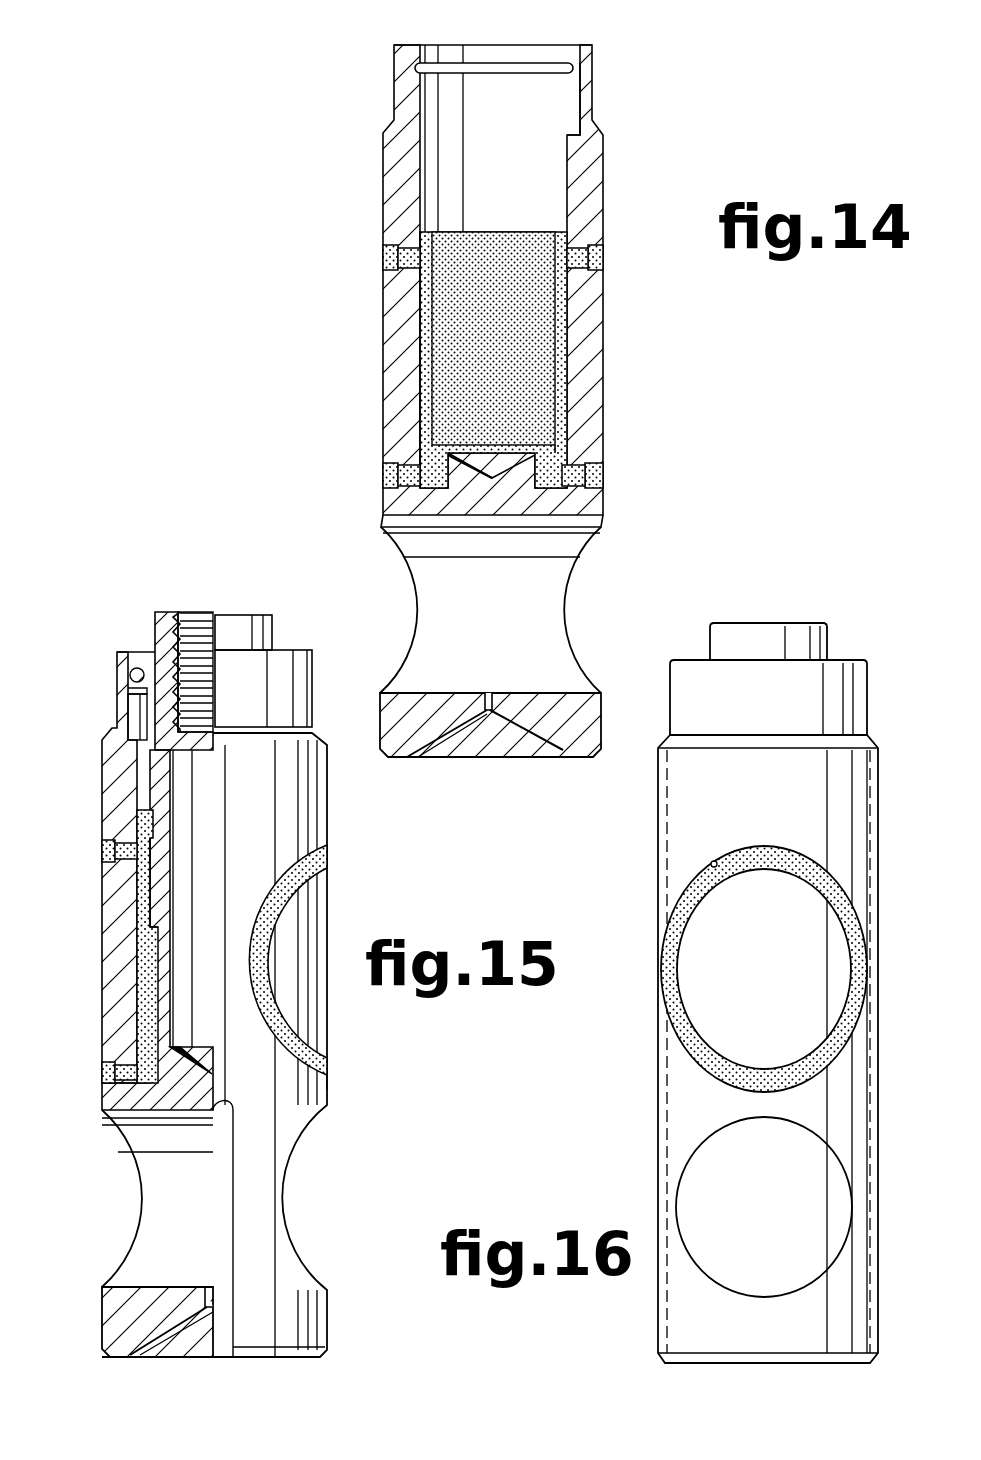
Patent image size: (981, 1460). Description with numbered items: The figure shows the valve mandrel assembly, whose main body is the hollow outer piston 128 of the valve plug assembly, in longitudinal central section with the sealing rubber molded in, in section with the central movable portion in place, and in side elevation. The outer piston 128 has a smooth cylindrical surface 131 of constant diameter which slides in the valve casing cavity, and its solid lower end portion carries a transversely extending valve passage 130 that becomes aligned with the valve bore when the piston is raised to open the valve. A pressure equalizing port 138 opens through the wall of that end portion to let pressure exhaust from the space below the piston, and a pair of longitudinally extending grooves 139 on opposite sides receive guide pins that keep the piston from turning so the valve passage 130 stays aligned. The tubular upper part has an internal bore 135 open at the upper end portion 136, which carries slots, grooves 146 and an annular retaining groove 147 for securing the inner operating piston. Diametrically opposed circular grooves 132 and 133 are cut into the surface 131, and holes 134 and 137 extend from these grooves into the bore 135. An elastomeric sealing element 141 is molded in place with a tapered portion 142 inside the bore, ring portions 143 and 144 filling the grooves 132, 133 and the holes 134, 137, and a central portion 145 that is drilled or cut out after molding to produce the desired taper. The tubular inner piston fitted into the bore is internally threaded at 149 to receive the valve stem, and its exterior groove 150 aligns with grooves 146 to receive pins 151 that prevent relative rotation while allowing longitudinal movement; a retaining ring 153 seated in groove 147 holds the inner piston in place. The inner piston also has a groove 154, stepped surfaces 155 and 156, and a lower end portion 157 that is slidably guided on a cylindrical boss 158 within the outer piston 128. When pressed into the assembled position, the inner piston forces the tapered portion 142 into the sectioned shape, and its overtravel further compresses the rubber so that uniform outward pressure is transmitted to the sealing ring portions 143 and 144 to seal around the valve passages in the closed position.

In FIG. 14, the outer piston 128 is at (640, 330).
In FIG. 16, the outer piston 128 is at (623, 1010).
In FIG. 14, the valve passage 130 is at (413, 694).
In FIG. 15, the valve passage 130 is at (120, 1290).
In FIG. 16, the valve passage 130 is at (712, 1276).
In FIG. 14, the smooth cylindrical surface 131 is at (603, 150).
In FIG. 14, the circular groove 132 is at (592, 488).
In FIG. 15, the circular groove 132 is at (322, 1094).
In FIG. 16, the circular groove 132 is at (712, 861).
In FIG. 14, the circular groove 133 is at (384, 507).
In FIG. 15, the circular groove 133 is at (100, 1103).
In FIG. 14, the holes 134 is at (573, 489).
In FIG. 14, the internal bore 135 is at (424, 358).
In FIG. 14, the upper end portion 136 is at (598, 45).
In FIG. 16, the upper end portion 136 is at (730, 623).
In FIG. 14, the holes 137 is at (392, 521).
In FIG. 14, the pressure equalizing port 138 is at (490, 694).
In FIG. 15, the pressure equalizing port 138 is at (213, 1292).
In FIG. 15, the longitudinally extending grooves 139 is at (220, 860).
In FIG. 16, the longitudinally extending grooves 139 is at (662, 848).
In FIG. 14, the sealing element 141 is at (560, 392).
In FIG. 14, the tapered portion 142 is at (558, 440).
In FIG. 14, the sealing ring portion 143 is at (603, 256).
In FIG. 15, the sealing ring portion 143 is at (322, 1076).
In FIG. 16, the sealing ring portion 143 is at (766, 852).
In FIG. 14, the sealing ring portion 144 is at (388, 253).
In FIG. 15, the sealing ring portion 144 is at (110, 1071).
In FIG. 14, the central portion 145 is at (487, 246).
In FIG. 14, the grooves 146 is at (570, 122).
In FIG. 15, the grooves 146 is at (132, 656).
In FIG. 14, the annular retaining groove 147 is at (480, 70).
In FIG. 15, the internal threads 149 is at (203, 640).
In FIG. 15, the groove 150 is at (130, 691).
In FIG. 15, the pins 151 is at (135, 719).
In FIG. 15, the retaining ring 153 is at (130, 675).
In FIG. 15, the groove 154 is at (138, 827).
In FIG. 15, the stepped surface 155 is at (145, 881).
In FIG. 15, the stepped surface 156 is at (150, 956).
In FIG. 15, the lower end portion 157 is at (160, 986).
In FIG. 14, the cylindrical boss 158 is at (452, 466).
In FIG. 15, the cylindrical boss 158 is at (178, 1068).